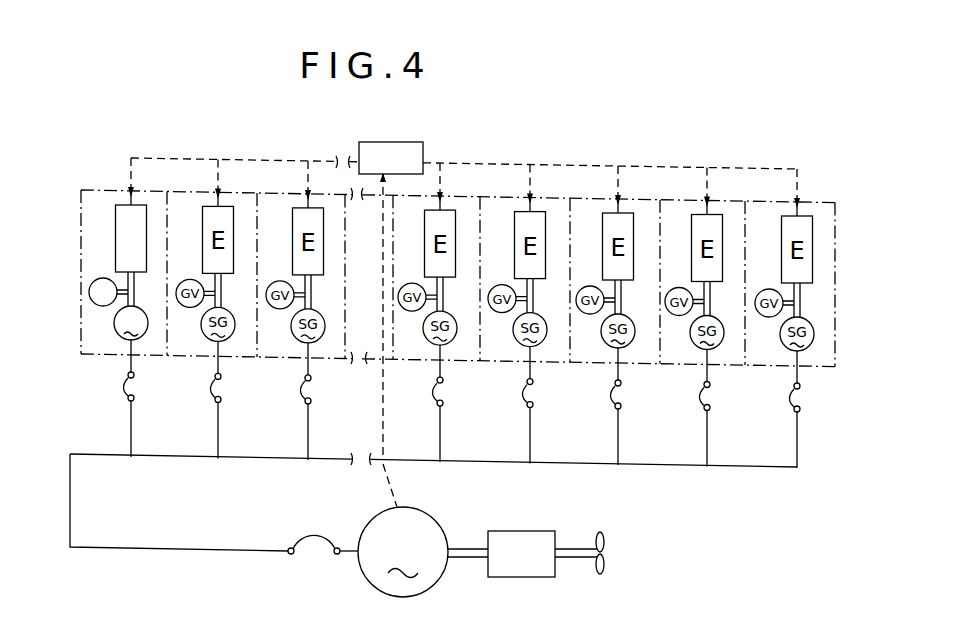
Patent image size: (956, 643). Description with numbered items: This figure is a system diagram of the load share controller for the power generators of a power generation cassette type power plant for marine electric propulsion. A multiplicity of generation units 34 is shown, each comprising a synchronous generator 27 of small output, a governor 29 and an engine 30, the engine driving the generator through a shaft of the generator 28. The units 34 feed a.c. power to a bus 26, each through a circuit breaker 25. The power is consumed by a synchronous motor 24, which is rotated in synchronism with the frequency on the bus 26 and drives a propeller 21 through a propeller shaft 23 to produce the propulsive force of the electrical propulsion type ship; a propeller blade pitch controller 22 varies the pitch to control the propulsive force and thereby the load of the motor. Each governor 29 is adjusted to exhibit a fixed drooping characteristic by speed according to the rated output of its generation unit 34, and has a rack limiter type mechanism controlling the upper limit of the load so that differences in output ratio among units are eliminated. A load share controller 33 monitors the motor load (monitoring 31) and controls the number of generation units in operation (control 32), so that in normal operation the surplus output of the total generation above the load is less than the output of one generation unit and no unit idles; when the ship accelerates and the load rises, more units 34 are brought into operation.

The propeller 21 is at (605, 533).
The propeller blade pitch controller 22 is at (518, 531).
The propeller shaft 23 is at (463, 547).
The synchronous motor 24 is at (427, 512).
The circuit breaker 25 is at (306, 530).
The bus 26 is at (175, 457).
The synchronous generator 27 is at (145, 336).
The shaft of the generator 28 is at (145, 289).
The governor 29 is at (103, 307).
The engine 30 is at (115, 238).
The load monitoring 31 is at (383, 329).
The control of the number of generation units 32 is at (553, 161).
The load share controller 33 is at (424, 151).
The generation unit 34 is at (96, 190).